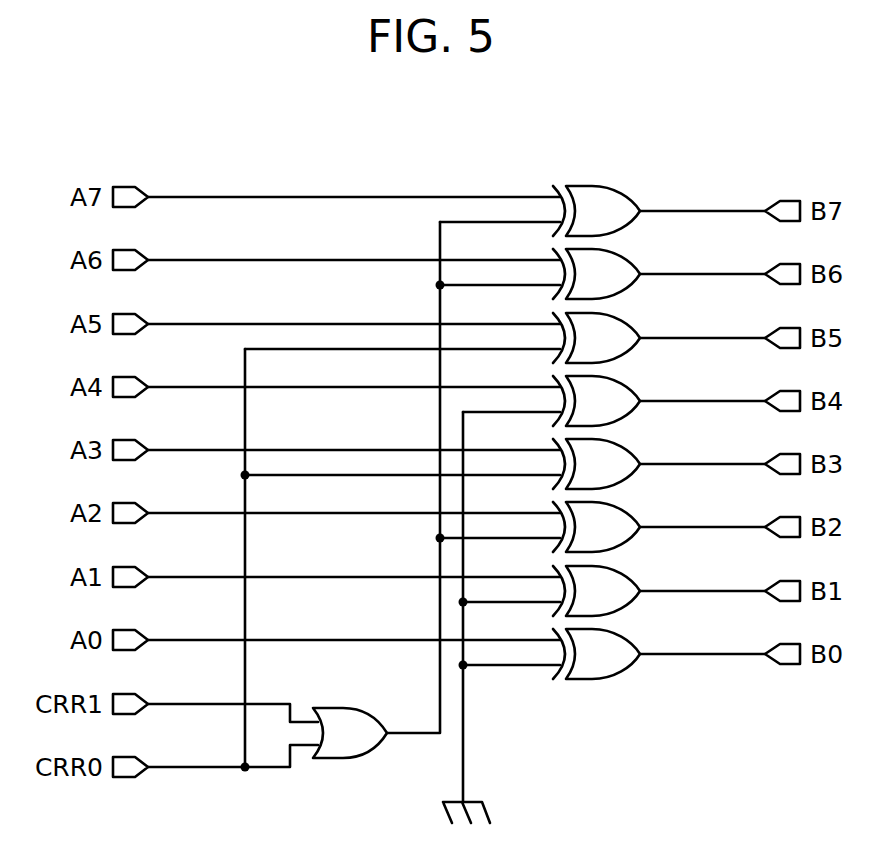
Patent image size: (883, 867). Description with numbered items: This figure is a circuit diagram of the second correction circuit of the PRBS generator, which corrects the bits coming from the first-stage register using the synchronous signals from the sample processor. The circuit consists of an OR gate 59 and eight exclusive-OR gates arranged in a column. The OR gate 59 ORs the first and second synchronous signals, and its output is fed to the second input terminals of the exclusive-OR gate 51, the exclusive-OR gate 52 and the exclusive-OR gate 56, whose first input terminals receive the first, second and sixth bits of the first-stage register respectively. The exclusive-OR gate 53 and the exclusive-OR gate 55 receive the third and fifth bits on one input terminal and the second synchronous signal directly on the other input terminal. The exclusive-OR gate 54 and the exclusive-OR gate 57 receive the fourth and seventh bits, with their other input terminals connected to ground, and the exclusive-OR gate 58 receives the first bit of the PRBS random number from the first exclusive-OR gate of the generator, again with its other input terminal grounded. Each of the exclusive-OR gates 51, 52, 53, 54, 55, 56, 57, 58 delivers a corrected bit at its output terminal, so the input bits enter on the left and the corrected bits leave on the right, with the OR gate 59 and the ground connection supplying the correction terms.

The exclusive-OR gate 51 is at (596, 211).
The exclusive-OR gate 52 is at (596, 274).
The exclusive-OR gate 53 is at (596, 338).
The exclusive-OR gate 54 is at (596, 401).
The exclusive-OR gate 55 is at (596, 464).
The exclusive-OR gate 56 is at (596, 527).
The exclusive-OR gate 57 is at (596, 591).
The exclusive-OR gate 58 is at (596, 654).
The OR gate 59 is at (350, 733).